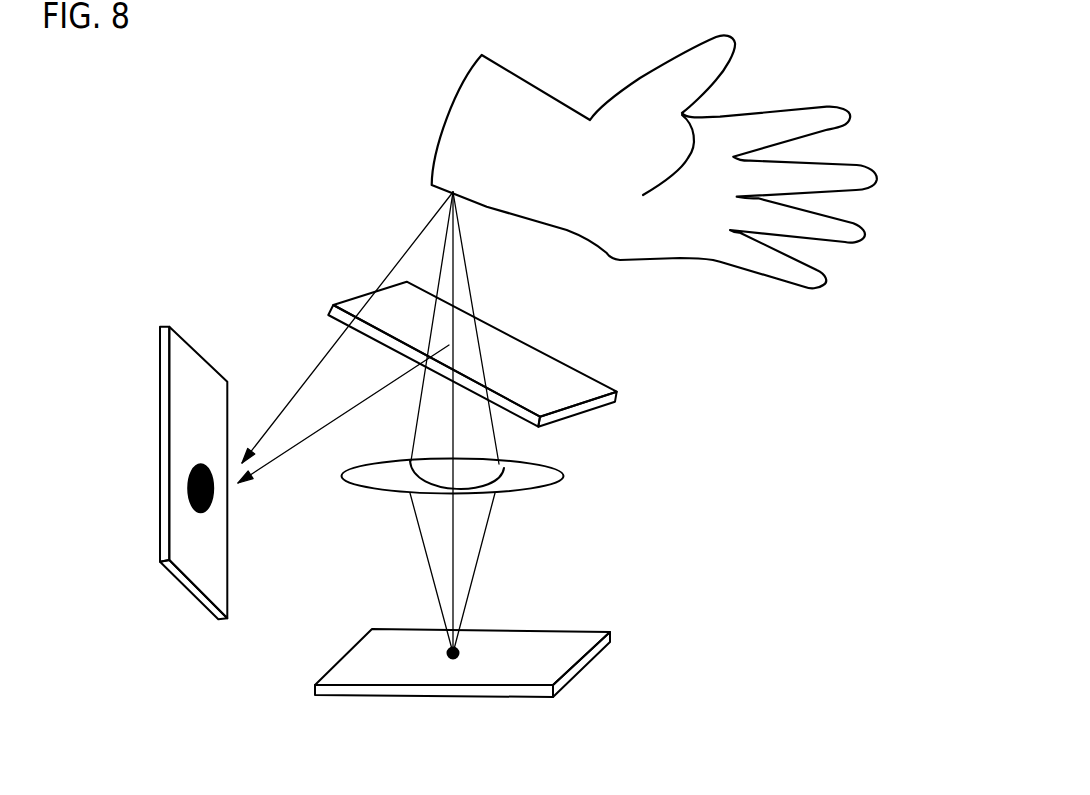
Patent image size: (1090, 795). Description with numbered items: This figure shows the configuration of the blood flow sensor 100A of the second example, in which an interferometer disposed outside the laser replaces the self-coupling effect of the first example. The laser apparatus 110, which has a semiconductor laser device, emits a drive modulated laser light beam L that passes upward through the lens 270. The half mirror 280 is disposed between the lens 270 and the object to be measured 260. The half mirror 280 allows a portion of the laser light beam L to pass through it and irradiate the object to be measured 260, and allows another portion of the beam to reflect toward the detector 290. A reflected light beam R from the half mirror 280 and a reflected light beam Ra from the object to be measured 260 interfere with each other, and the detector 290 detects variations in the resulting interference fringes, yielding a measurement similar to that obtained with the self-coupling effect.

The blood flow sensor 100A is at (262, 215).
The object to be measured 260 is at (457, 132).
The half mirror 280 is at (590, 388).
The lens 270 is at (563, 477).
The laser apparatus 110 is at (602, 648).
The detector 290 is at (167, 323).